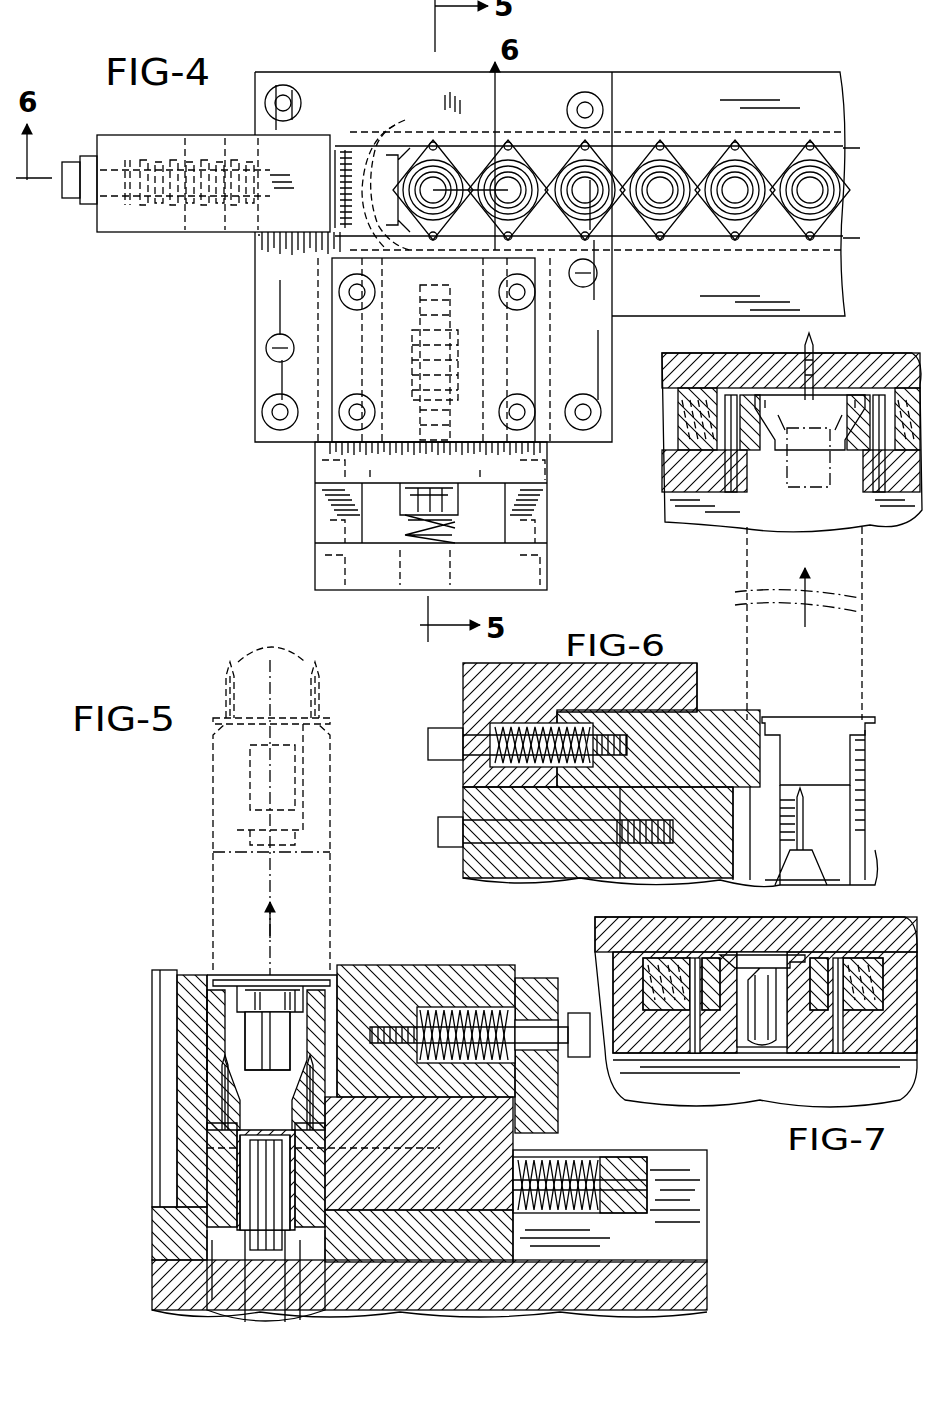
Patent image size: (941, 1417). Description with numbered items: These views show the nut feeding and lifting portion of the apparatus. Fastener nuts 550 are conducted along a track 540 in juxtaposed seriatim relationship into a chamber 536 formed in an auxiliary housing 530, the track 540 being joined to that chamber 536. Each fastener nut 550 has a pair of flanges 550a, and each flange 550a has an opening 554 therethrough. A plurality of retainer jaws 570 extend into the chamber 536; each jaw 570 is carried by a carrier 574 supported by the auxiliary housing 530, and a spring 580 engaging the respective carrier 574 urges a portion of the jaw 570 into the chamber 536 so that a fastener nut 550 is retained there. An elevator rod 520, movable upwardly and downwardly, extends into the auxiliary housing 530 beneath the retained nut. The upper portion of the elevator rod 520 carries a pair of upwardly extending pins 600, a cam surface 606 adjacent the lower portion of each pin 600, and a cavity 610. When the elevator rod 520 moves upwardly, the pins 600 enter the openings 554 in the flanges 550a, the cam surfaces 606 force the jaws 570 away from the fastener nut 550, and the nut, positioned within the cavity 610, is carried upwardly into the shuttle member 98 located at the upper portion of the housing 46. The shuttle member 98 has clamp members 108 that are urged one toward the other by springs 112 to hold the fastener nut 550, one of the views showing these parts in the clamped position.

In FIG. 6, the housing 46 is at (690, 504).
In FIG. 7, the housing 46 is at (852, 1096).
In FIG. 6, the shuttle member 98 is at (662, 374).
In FIG. 7, the shuttle member 98 is at (608, 972).
In FIG. 6, the clamp members 108 is at (730, 395).
In FIG. 7, the clamp members 108 is at (706, 958).
In FIG. 6, the springs 112 is at (662, 417).
In FIG. 7, the springs 112 is at (655, 958).
In FIG. 6, the elevator rod 520 is at (745, 598).
In FIG. 5, the elevator rod 520 is at (248, 1308).
In FIG. 5, the auxiliary housing 530 is at (707, 1282).
In FIG. 4, the chamber 536 is at (418, 132).
In FIG. 5, the chamber 536 is at (285, 1130).
In FIG. 4, the track 540 is at (700, 86).
In FIG. 4, the fastener nuts 550 is at (468, 242).
In FIG. 6, the fastener nuts 550 is at (805, 504).
In FIG. 7, the fastener nuts 550 is at (757, 1048).
In FIG. 5, the fastener nuts 550 is at (240, 772).
In FIG. 4, the flanges 550a is at (877, 193).
In FIG. 4, the openings 554 is at (808, 144).
In FIG. 4, the retainer jaws 570 is at (446, 115).
In FIG. 6, the retainer jaws 570 is at (710, 712).
In FIG. 5, the retainer jaws 570 is at (195, 980).
In FIG. 4, the carrier 574 is at (255, 290).
In FIG. 6, the carrier 574 is at (463, 786).
In FIG. 5, the carrier 574 is at (160, 1242).
In FIG. 4, the spring 580 is at (152, 165).
In FIG. 6, the spring 580 is at (490, 732).
In FIG. 5, the spring 580 is at (447, 1030).
In FIG. 6, the pins 600 is at (800, 356).
In FIG. 5, the pins 600 is at (303, 1086).
In FIG. 5, the cam surfaces 606 is at (207, 1140).
In FIG. 5, the cavity 610 is at (258, 1232).